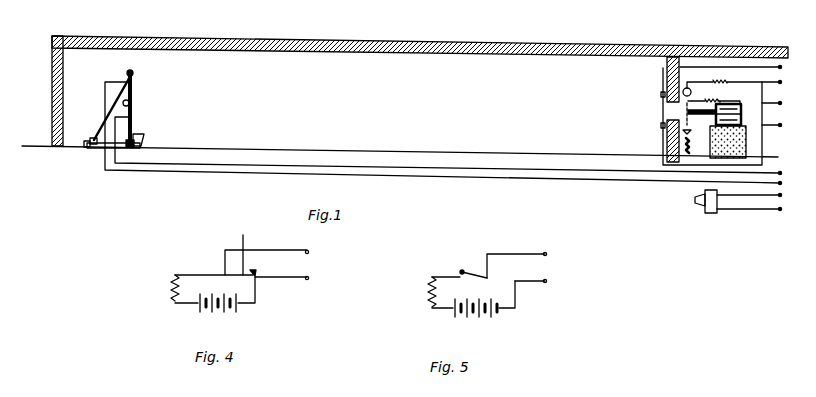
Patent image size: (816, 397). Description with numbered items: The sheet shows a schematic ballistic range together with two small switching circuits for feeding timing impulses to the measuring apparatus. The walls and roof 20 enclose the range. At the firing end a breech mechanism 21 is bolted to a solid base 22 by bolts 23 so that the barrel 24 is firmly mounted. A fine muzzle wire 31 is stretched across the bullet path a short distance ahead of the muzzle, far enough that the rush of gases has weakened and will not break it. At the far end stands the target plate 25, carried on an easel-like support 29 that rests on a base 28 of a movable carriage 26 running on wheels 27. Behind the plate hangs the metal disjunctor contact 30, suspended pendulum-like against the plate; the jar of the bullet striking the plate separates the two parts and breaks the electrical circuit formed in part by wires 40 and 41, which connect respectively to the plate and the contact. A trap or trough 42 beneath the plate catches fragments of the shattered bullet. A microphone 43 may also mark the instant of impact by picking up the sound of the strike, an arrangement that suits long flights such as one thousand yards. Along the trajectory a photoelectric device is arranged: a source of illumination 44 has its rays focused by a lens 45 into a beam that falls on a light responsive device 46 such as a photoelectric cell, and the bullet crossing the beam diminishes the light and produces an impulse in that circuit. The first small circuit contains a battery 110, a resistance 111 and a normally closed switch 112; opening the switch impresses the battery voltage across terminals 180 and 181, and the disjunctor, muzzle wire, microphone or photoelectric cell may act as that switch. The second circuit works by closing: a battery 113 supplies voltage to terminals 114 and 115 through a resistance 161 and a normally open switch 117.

In FIG. 1, the walls and roof of ballistic range 20 is at (52, 81).
In FIG. 1, the breech mechanism 21 is at (738, 105).
In FIG. 1, the solid base 22 is at (738, 113).
In FIG. 1, the bolts 23 is at (708, 110).
In FIG. 1, the barrel 24 is at (697, 118).
In FIG. 1, the target plate 25 is at (132, 104).
In FIG. 1, the movable carriage 26 is at (103, 118).
In FIG. 1, the wheels 27 is at (132, 147).
In FIG. 1, the base 28 is at (87, 144).
In FIG. 1, the easel-like support 29 is at (134, 72).
In FIG. 1, the disjunctor contact 30 is at (133, 90).
In FIG. 1, the muzzle wire 31 is at (663, 107).
In FIG. 1, the wire 40 is at (217, 166).
In FIG. 1, the wire 41 is at (222, 172).
In FIG. 1, the trap or trough 42 is at (142, 136).
In FIG. 1, the microphone 43 is at (710, 213).
In FIG. 1, the source of illumination 44 is at (688, 133).
In FIG. 1, the lens 45 is at (665, 130).
In FIG. 1, the light responsive electrical device 46 is at (691, 93).
In FIG. 4, the battery 110 is at (240, 313).
In FIG. 4, the resistance 111 is at (170, 290).
In FIG. 4, the normally closed switch 112 is at (250, 245).
In FIG. 5, the battery 113 is at (497, 317).
In FIG. 5, the terminal 114 is at (549, 254).
In FIG. 5, the terminal 115 is at (549, 281).
In FIG. 5, the normally open switch 117 is at (466, 271).
In FIG. 5, the resistance 161 is at (430, 292).
In FIG. 4, the terminal 180 is at (311, 251).
In FIG. 4, the terminal 181 is at (311, 278).